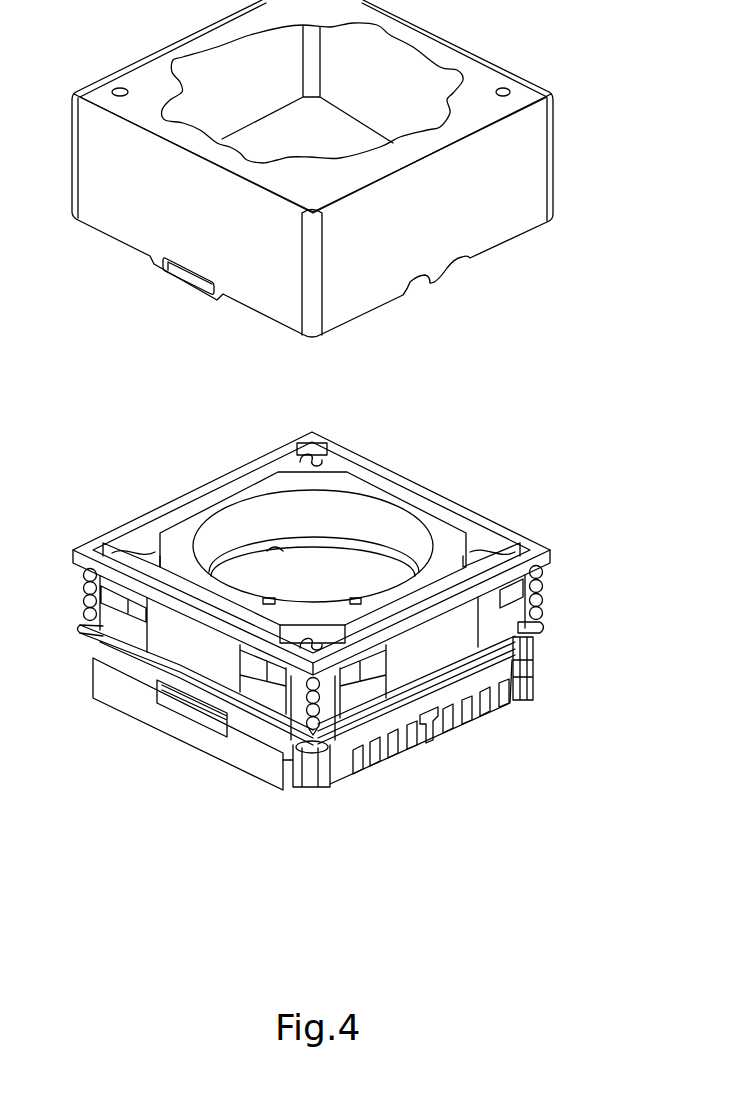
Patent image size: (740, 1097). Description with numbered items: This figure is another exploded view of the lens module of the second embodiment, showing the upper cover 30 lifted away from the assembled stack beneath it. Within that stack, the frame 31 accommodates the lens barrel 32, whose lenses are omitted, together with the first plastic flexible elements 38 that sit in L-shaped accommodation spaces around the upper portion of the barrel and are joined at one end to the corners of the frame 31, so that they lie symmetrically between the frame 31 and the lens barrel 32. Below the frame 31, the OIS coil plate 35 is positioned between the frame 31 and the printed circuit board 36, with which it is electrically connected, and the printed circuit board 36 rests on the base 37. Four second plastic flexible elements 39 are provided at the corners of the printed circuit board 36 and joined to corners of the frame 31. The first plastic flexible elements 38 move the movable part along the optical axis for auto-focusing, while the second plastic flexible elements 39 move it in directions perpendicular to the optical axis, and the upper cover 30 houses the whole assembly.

The upper cover 30 is at (541, 173).
The frame 31 is at (543, 557).
The lens barrel 32 is at (437, 537).
The OIS coil plate 35 is at (510, 633).
The printed circuit board 36 is at (470, 680).
The base 37 is at (250, 760).
The first plastic flexible element 38 is at (505, 550).
The second plastic flexible element 39 is at (530, 600).